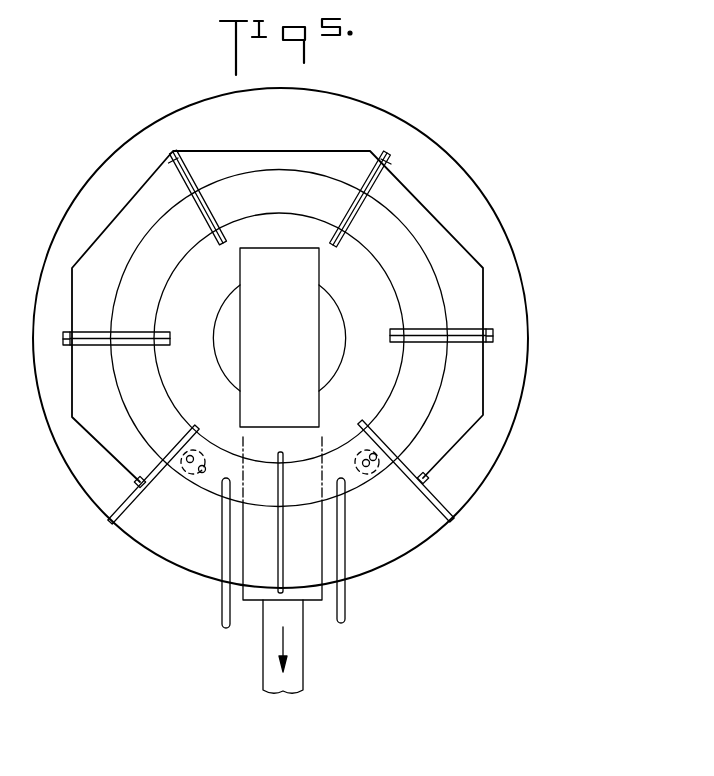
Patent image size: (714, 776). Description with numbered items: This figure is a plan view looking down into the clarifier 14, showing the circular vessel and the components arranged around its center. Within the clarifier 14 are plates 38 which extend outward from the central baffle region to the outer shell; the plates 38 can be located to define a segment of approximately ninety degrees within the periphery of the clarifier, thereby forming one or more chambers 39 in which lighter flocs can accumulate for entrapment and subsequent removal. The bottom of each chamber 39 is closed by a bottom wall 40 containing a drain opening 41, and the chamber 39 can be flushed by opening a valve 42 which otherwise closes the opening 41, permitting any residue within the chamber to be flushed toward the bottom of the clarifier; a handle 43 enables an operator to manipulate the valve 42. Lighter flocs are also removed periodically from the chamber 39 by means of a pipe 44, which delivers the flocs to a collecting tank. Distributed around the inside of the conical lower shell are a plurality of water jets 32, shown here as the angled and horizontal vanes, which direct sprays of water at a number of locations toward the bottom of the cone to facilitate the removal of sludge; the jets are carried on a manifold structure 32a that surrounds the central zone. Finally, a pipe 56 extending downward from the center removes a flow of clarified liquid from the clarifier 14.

The clarifier 14 is at (497, 208).
The water jets 32 is at (284, 152).
The vane support frame 32a is at (478, 258).
The plates 38 is at (197, 427).
The chamber 39 is at (166, 540).
The bottom wall 40 is at (279, 362).
The drain opening 41 is at (202, 456).
The valve 42 is at (188, 478).
The handle 43 is at (212, 497).
The pipe 44 is at (222, 612).
The pipe 56 is at (304, 660).